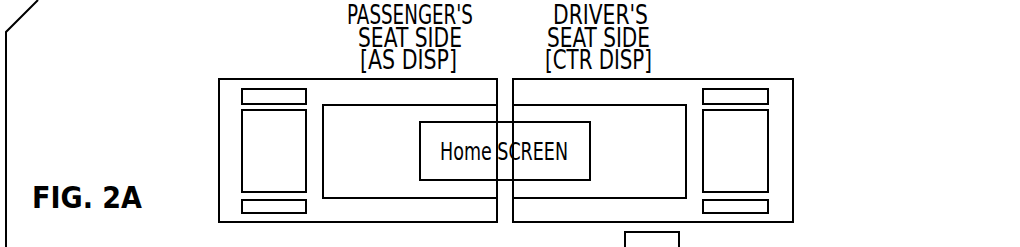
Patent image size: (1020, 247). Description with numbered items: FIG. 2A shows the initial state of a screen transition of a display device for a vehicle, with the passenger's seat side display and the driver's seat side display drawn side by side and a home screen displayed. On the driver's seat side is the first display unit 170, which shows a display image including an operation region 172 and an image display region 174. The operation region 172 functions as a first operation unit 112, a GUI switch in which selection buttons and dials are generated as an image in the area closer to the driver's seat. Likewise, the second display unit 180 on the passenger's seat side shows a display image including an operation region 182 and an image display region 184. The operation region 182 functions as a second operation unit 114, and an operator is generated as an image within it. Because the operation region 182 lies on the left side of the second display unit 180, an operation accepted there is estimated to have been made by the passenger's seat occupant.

The first display unit 170 is at (795, 152).
The operation region 172 is at (812, 138).
The first operation unit 112 is at (757, 127).
The image display region 174 is at (650, 115).
The second display unit 180 is at (219, 152).
The operation region 182 is at (194, 138).
The second operation unit 114 is at (250, 127).
The image display region 184 is at (360, 113).